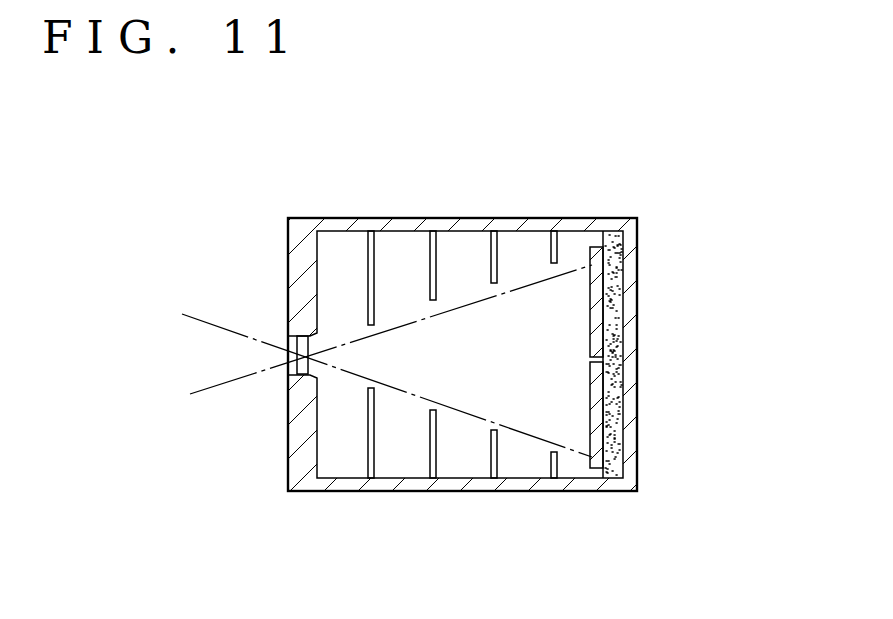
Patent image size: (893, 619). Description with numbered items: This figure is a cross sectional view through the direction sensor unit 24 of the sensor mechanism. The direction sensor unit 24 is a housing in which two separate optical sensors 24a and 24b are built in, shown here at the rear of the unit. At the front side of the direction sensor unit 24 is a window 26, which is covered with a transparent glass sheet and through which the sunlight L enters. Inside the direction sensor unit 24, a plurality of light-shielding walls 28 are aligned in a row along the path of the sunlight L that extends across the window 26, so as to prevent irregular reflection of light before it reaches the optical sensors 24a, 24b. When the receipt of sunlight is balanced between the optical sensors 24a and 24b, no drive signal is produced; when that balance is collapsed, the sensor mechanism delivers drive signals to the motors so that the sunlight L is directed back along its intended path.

The direction sensor unit 24 is at (480, 492).
The optical sensor 24a is at (604, 298).
The optical sensor 24b is at (604, 413).
The window 26 is at (303, 357).
The light-shielding walls 28 is at (369, 262).
The path of sunlight L is at (203, 394).